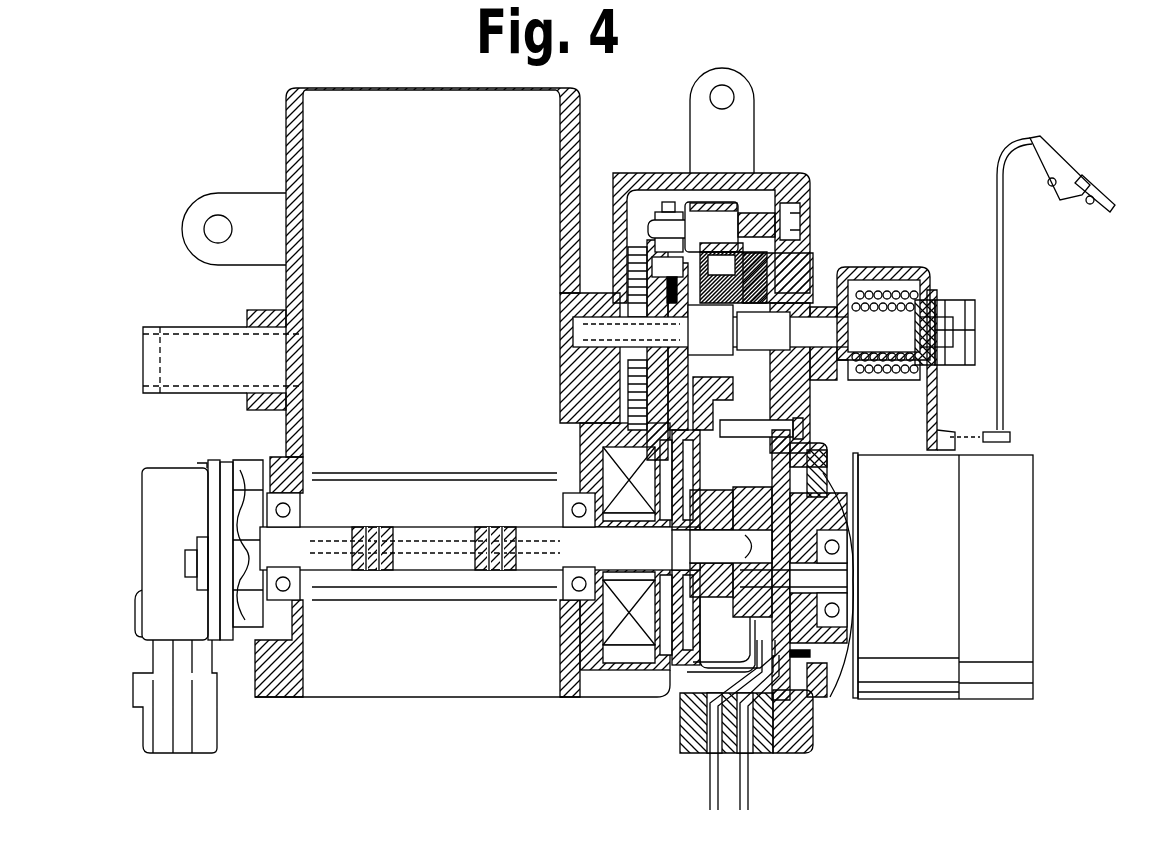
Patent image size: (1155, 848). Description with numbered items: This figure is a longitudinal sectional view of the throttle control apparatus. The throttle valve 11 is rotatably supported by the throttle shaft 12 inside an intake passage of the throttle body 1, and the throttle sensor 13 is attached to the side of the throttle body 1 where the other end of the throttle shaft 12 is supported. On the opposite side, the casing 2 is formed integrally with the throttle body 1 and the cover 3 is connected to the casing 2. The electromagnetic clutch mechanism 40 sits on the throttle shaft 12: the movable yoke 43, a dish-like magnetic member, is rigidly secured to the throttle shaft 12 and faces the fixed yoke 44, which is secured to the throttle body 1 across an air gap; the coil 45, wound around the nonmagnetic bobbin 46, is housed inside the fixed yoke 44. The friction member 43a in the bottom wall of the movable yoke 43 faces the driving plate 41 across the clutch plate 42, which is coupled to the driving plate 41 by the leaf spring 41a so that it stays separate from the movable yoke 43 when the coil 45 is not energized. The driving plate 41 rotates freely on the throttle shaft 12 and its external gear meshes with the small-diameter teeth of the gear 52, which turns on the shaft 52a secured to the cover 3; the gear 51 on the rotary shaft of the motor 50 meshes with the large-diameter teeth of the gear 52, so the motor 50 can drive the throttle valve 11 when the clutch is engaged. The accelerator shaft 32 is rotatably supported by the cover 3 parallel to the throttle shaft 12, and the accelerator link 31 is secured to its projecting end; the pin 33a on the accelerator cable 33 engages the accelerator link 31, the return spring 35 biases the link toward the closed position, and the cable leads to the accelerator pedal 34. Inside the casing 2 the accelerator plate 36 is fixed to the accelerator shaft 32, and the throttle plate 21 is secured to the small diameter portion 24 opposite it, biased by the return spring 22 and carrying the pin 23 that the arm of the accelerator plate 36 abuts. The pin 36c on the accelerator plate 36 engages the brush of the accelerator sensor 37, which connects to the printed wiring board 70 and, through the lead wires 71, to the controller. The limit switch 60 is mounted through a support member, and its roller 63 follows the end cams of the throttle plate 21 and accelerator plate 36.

The throttle body 1 is at (286, 132).
The casing 2 is at (748, 180).
The cover 3 is at (790, 188).
The throttle valve 11 is at (432, 573).
The throttle shaft 12 is at (525, 573).
The throttle sensor 13 is at (175, 460).
The throttle plate 21 is at (627, 262).
The return spring 22 is at (640, 290).
The pin 23 is at (625, 440).
The small diameter portion 24 is at (598, 332).
The accelerator link 31 is at (932, 372).
The accelerator shaft 32 is at (885, 335).
The accelerator cable 33 is at (1003, 310).
The pin 33a is at (1012, 437).
The accelerator pedal 34 is at (1055, 200).
The return spring 35 is at (860, 285).
The accelerator plate 36 is at (700, 300).
The pin 36c is at (940, 418).
The accelerator sensor 37 is at (773, 275).
The electromagnetic clutch mechanism 40 is at (626, 668).
The driving plate 41 is at (845, 620).
The leaf spring 41a is at (845, 578).
The clutch plate 42 is at (702, 655).
The movable yoke 43 is at (680, 612).
The friction member 43a is at (600, 465).
The fixed yoke 44 is at (580, 605).
The coil 45 is at (627, 648).
The bobbin 46 is at (660, 650).
The motor 50 is at (922, 650).
The gear 51 is at (871, 607).
The gear 52 is at (800, 485).
The shaft 52a is at (852, 530).
The limit switch 60 is at (668, 200).
The roller 63 is at (652, 268).
The printed wiring board 70 is at (778, 745).
The lead wires 71 is at (756, 719).